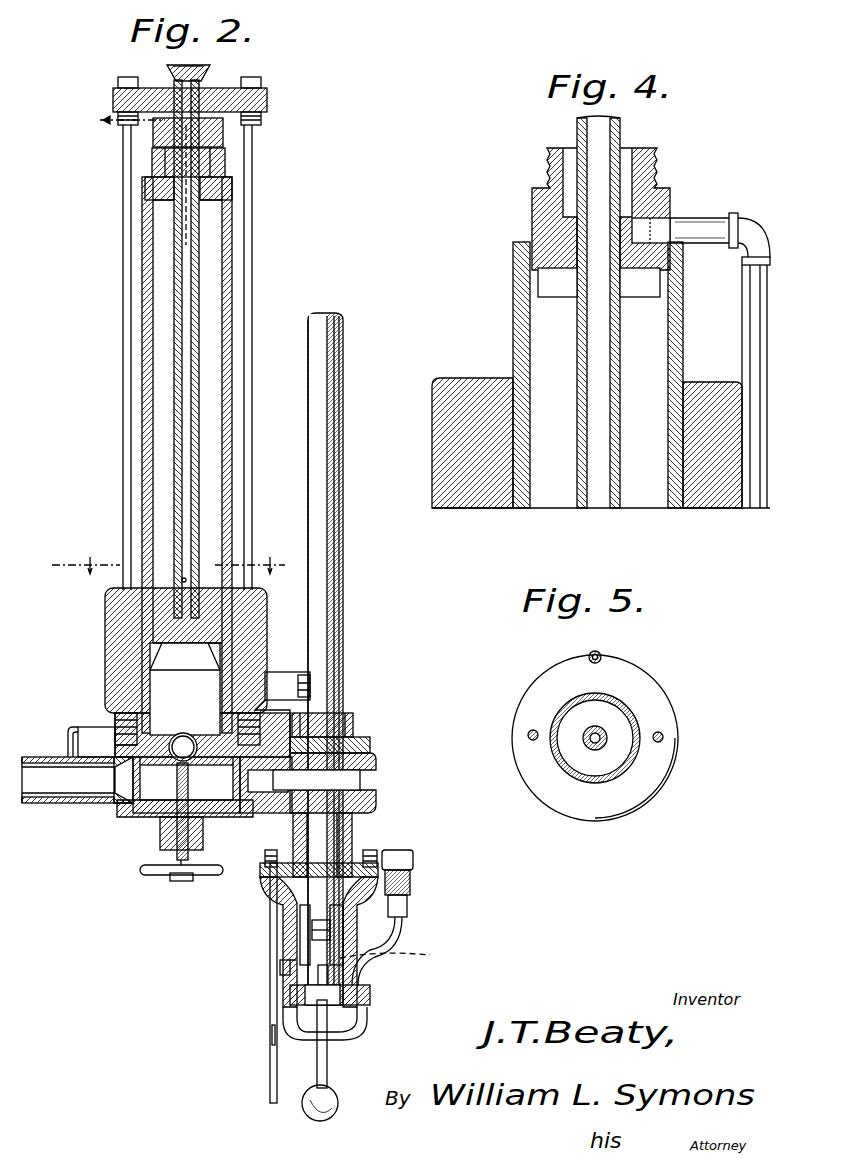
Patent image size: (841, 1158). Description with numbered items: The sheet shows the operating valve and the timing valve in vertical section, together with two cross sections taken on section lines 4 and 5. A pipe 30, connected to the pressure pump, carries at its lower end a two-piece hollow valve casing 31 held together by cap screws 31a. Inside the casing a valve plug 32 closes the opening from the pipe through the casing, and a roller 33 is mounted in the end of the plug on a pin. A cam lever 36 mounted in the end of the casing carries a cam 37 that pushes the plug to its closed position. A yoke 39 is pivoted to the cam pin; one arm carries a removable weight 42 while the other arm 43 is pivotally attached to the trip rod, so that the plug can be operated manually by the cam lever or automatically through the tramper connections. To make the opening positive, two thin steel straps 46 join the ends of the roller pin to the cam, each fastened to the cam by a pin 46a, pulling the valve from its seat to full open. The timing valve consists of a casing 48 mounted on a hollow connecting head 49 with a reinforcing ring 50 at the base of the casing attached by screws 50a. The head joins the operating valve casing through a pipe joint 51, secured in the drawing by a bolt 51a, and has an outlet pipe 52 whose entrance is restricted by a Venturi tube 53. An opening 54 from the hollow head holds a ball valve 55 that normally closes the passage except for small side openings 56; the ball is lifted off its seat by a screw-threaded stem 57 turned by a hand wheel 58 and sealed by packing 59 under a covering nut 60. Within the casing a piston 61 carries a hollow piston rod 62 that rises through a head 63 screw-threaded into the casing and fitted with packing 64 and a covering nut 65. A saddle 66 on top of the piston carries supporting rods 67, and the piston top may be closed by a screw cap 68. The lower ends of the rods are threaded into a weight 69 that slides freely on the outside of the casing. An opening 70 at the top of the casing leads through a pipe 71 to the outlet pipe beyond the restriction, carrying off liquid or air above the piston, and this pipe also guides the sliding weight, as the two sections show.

In FIG. 2, the pipe 30 is at (343, 420).
In FIG. 2, the two-piece hollow valve casing 31 is at (370, 762).
In FIG. 2, the cap screws 31a is at (372, 852).
In FIG. 2, the valve plug 32 is at (360, 780).
In FIG. 2, the roller 33 is at (305, 942).
In FIG. 2, the cam lever 36 is at (328, 1060).
In FIG. 2, the cam 37 is at (300, 995).
In FIG. 2, the yoke 39 is at (400, 935).
In FIG. 2, the removable weight 42 is at (414, 880).
In FIG. 2, the arm 43 is at (362, 1018).
In FIG. 2, the thin steel straps 46 is at (283, 972).
In FIG. 2, the pin 46a is at (379, 956).
In FIG. 2, the casing 48 is at (232, 312).
In FIG. 4, the casing 48 is at (676, 508).
In FIG. 5, the casing 48 is at (635, 710).
In FIG. 2, the hollow connecting head 49 is at (96, 742).
In FIG. 2, the reinforcing ring 50 is at (118, 723).
In FIG. 2, the screws 50a is at (265, 700).
In FIG. 2, the pipe joint 51 is at (246, 805).
In FIG. 2, the bolt 51a is at (263, 854).
In FIG. 2, the outlet pipe 52 is at (40, 805).
In FIG. 2, the Venturi tube 53 is at (115, 806).
In FIG. 2, the opening 54 is at (290, 945).
In FIG. 2, the ball valve 55 is at (188, 740).
In FIG. 2, the side openings 56 is at (176, 735).
In FIG. 2, the screw-threaded stem 57 is at (177, 828).
In FIG. 2, the hand wheel 58 is at (166, 877).
In FIG. 2, the packing 59 is at (162, 838).
In FIG. 2, the covering nut 60 is at (170, 876).
In FIG. 2, the piston 61 is at (150, 620).
In FIG. 2, the hollow piston rod 62 is at (200, 270).
In FIG. 4, the hollow piston rod 62 is at (600, 508).
In FIG. 5, the hollow piston rod 62 is at (590, 745).
In FIG. 2, the head 63 is at (226, 159).
In FIG. 4, the head 63 is at (540, 215).
In FIG. 2, the packing 64 is at (202, 171).
In FIG. 2, the covering nut 65 is at (225, 134).
In FIG. 2, the saddle 66 is at (262, 95).
In FIG. 2, the supporting rods 67 is at (122, 242).
In FIG. 5, the supporting rods 67 is at (530, 730).
In FIG. 2, the screw cap 68 is at (208, 72).
In FIG. 2, the weight 69 is at (250, 630).
In FIG. 4, the weight 69 is at (470, 380).
In FIG. 5, the weight 69 is at (646, 683).
In FIG. 4, the opening 70 is at (660, 280).
In FIG. 2, the pipe 71 is at (64, 748).
In FIG. 4, the pipe 71 is at (700, 218).
In FIG. 5, the pipe 71 is at (602, 652).
In FIG. 2, the section line 4- 4 is at (206, 245).
In FIG. 2, the section line 5- 5 is at (169, 565).